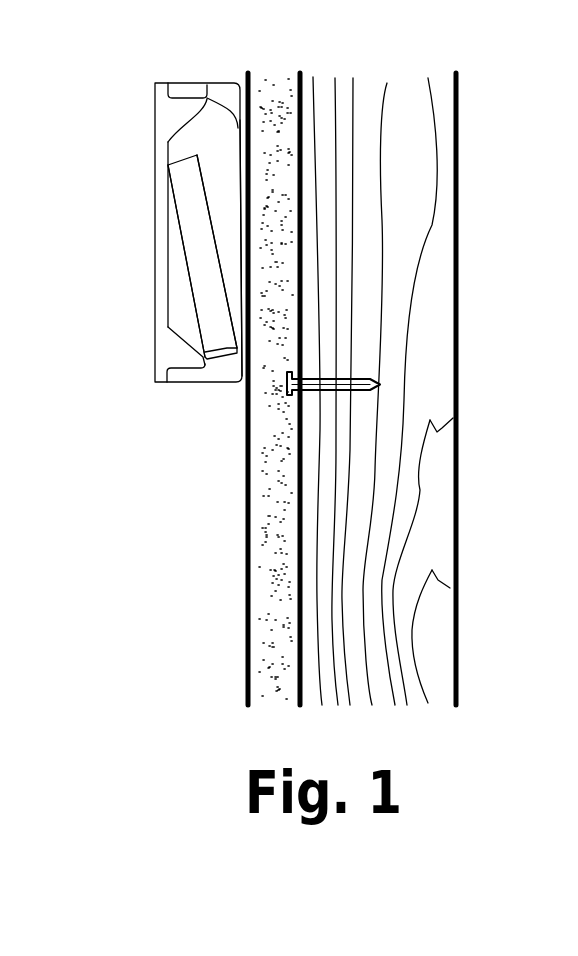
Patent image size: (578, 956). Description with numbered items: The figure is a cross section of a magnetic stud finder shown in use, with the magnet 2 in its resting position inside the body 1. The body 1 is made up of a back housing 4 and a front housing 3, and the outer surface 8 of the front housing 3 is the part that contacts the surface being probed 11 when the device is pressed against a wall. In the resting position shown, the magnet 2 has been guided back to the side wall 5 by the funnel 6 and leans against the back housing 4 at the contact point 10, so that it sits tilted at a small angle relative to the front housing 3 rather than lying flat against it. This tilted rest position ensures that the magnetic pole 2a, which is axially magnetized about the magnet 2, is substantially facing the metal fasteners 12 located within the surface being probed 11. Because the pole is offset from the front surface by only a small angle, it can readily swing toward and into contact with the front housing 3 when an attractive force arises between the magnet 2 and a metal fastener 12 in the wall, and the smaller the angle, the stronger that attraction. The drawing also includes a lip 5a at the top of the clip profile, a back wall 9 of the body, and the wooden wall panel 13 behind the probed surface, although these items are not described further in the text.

The body 1 is at (177, 222).
The magnet 2 is at (207, 285).
The magnetic pole 2a is at (183, 262).
The front housing 3 is at (200, 375).
The back housing 4 is at (165, 128).
The side wall 5 is at (225, 362).
The upper lip 5a is at (227, 107).
The funnel 6 is at (180, 345).
The outer surface 8 is at (237, 117).
The back wall 9 is at (235, 145).
The contact point 10 is at (165, 165).
The surface being probed 11 is at (282, 195).
The metal fasteners 12 is at (378, 375).
The wooden panel 13 is at (413, 450).